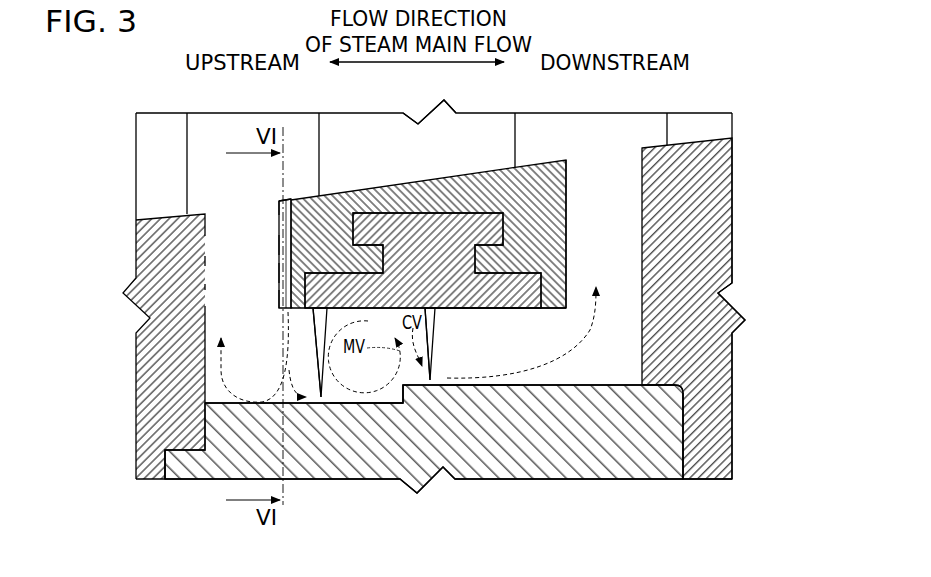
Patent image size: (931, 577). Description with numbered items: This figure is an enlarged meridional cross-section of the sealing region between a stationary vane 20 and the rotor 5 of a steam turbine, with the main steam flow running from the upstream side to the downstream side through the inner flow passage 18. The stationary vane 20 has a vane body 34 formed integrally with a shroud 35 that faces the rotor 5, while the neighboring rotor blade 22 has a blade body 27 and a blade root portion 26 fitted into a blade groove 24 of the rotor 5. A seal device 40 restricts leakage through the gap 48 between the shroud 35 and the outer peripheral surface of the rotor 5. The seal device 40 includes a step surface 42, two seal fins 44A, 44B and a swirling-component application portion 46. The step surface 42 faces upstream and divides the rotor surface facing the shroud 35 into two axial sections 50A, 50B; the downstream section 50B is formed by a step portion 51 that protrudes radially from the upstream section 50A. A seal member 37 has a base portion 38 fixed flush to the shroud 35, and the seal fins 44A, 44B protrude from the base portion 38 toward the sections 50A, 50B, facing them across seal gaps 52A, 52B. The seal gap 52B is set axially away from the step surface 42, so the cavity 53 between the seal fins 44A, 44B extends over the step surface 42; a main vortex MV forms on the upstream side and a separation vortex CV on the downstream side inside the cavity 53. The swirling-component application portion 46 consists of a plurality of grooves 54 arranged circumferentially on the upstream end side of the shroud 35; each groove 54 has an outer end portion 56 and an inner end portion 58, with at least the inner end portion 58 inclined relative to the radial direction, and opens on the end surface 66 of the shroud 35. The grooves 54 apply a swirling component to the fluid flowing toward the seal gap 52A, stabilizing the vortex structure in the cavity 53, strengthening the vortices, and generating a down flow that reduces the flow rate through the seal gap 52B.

The rotor 5 is at (533, 467).
The inner flow passage 18 is at (215, 173).
The stationary vane 20 is at (572, 138).
The rotor blade 22 is at (132, 136).
The blade groove 24 is at (162, 468).
The blade root portion 26 is at (152, 481).
The blade body 27 is at (160, 120).
The vane body 34 is at (478, 113).
The shroud 35 is at (408, 195).
The seal member 37 is at (380, 220).
The base portion 38 is at (518, 310).
The seal device 40 is at (226, 225).
The step surface 42 is at (395, 404).
The seal fin 44A is at (322, 398).
The seal fin 44B is at (434, 338).
The swirling-component application portion 46 is at (282, 274).
The gap 48 is at (466, 363).
The section 50A is at (360, 404).
The section 50B is at (486, 386).
The step portion 51 is at (455, 386).
The seal gap 52A is at (325, 398).
The seal gap 52B is at (430, 386).
The cavity 53 is at (377, 385).
The groove 54 is at (282, 246).
The outer end portion 56 is at (282, 206).
The inner end portion 58 is at (281, 300).
The end surface 66 is at (282, 229).